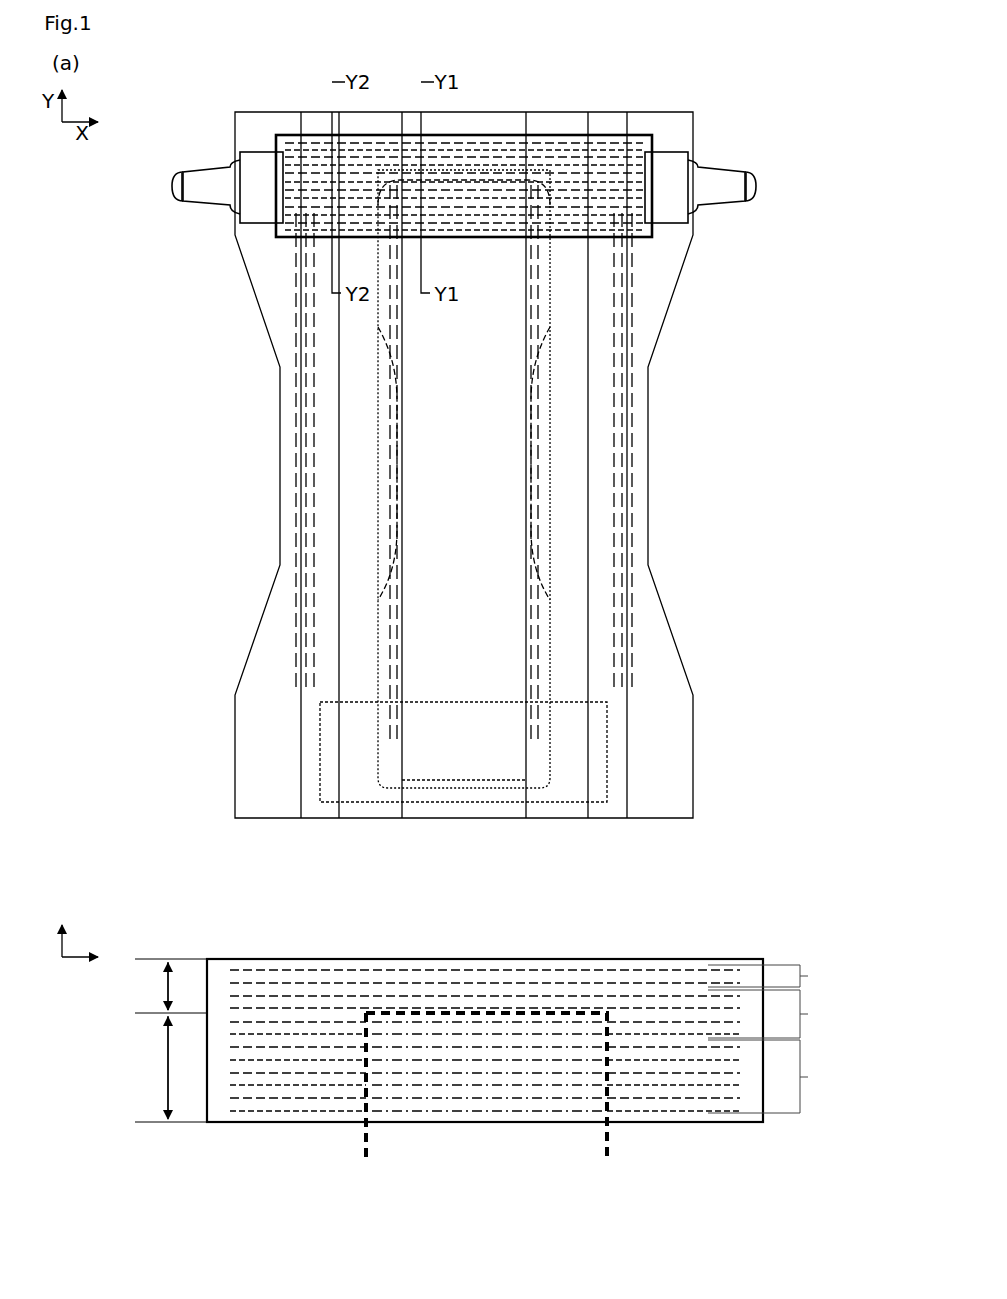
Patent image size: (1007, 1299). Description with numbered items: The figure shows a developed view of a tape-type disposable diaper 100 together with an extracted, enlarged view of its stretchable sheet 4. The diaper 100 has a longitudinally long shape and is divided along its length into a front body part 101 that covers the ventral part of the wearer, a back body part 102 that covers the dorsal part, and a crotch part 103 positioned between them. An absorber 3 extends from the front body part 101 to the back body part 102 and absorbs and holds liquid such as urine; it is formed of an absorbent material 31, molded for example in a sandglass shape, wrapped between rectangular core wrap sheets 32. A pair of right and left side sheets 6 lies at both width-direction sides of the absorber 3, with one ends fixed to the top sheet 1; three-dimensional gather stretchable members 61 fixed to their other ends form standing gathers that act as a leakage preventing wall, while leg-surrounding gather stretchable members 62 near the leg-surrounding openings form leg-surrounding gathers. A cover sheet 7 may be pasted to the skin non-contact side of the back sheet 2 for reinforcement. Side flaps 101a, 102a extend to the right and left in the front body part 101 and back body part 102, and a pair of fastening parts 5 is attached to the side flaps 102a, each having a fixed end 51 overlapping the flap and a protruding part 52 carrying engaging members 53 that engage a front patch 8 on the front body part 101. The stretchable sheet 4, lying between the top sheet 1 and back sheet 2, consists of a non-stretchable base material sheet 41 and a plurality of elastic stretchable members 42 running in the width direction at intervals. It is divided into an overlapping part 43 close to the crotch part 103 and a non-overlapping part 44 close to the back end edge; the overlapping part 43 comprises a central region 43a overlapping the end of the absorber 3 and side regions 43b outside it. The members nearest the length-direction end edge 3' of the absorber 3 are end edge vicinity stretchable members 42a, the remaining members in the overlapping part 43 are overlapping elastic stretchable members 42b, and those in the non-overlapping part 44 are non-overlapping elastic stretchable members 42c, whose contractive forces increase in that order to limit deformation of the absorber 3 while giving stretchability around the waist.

The tape-type disposable diaper 100 is at (778, 112).
The top sheet 1 is at (488, 112).
The back sheet 2 is at (518, 110).
The absorber 3 is at (509, 676).
The length-direction end edge of the absorber 3' is at (504, 962).
The stretchable sheet 4 is at (445, 612).
The base material sheet 41 is at (643, 240).
The elastic stretchable members 42 is at (600, 225).
The end edge vicinity stretchable members 42a is at (778, 1014).
The overlapping elastic stretchable members 42b is at (778, 1076).
The non-overlapping elastic stretchable members 42c is at (539, 986).
The overlapping part 43 is at (436, 1096).
The central region 43a is at (482, 1105).
The side regions 43b is at (262, 1105).
The non-overlapping part 44 is at (170, 986).
The fastening parts 5 is at (475, 201).
The fixed end 51 is at (256, 203).
The protruding part 52 is at (172, 187).
The engaging members 53 is at (208, 178).
The side sheets 6 is at (463, 464).
The three-dimensional gather stretchable members 61 is at (390, 497).
The leg-surrounding gather stretchable members 62 is at (312, 546).
The cover sheet 7 is at (698, 748).
The front patch 8 is at (468, 806).
The absorbent material 31 is at (537, 791).
The core wrap sheets 32 is at (486, 784).
The front body part 101 is at (118, 566).
The side flaps of the front body part 101a is at (250, 806).
The back body part 102 is at (118, 112).
The side flaps of the back body part 102a is at (248, 125).
The crotch part 103 is at (118, 366).